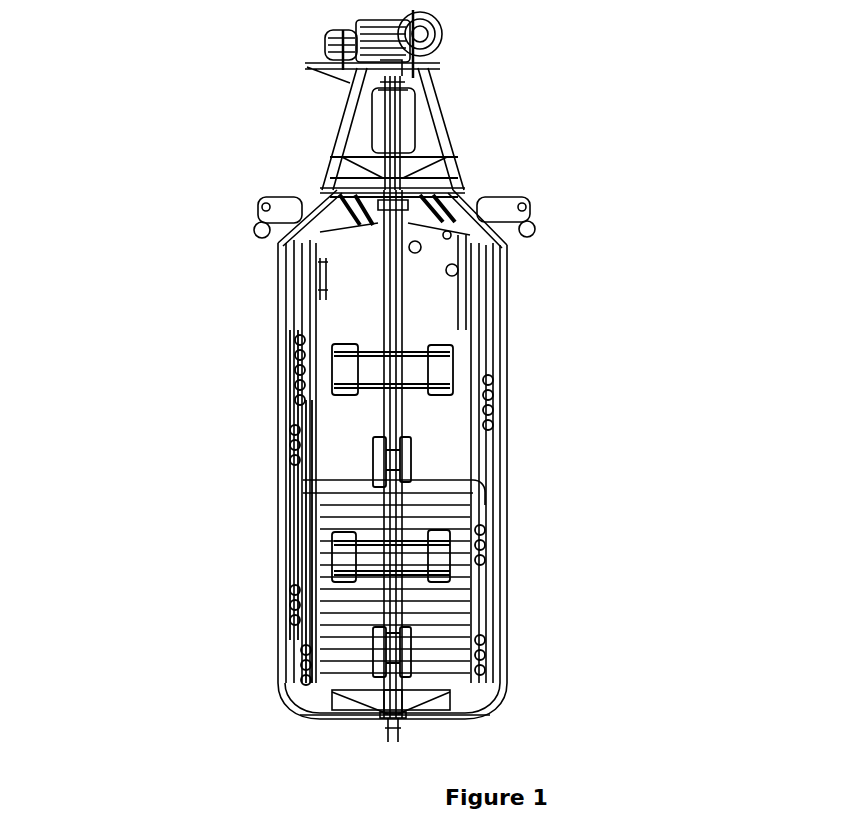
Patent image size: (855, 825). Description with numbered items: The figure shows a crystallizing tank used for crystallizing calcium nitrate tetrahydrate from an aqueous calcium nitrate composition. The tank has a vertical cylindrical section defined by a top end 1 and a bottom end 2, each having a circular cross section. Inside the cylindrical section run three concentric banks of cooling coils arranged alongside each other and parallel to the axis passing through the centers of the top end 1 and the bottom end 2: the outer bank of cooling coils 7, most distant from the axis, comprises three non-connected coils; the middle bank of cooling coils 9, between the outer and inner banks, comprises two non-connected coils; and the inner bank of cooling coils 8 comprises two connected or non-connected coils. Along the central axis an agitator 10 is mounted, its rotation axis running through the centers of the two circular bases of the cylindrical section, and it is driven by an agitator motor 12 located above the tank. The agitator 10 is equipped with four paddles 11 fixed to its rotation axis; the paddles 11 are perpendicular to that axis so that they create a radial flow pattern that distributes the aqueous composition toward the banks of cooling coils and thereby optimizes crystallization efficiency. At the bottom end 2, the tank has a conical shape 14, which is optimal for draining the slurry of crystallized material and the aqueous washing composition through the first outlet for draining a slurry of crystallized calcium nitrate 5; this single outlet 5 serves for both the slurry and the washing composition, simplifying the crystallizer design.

The top end 1 is at (344, 255).
The bottom end 2 is at (314, 692).
The first outlet for draining a slurry of crystallized calcium nitrate 5 is at (404, 727).
The outer bank of cooling coils 7 is at (279, 603).
The inner bank of cooling coils 8 is at (472, 620).
The middle bank of cooling coils 9 is at (297, 425).
The agitator 10 is at (411, 299).
The paddles 11 is at (391, 635).
The agitator motor 12 is at (416, 122).
The conical shape 14 is at (466, 687).